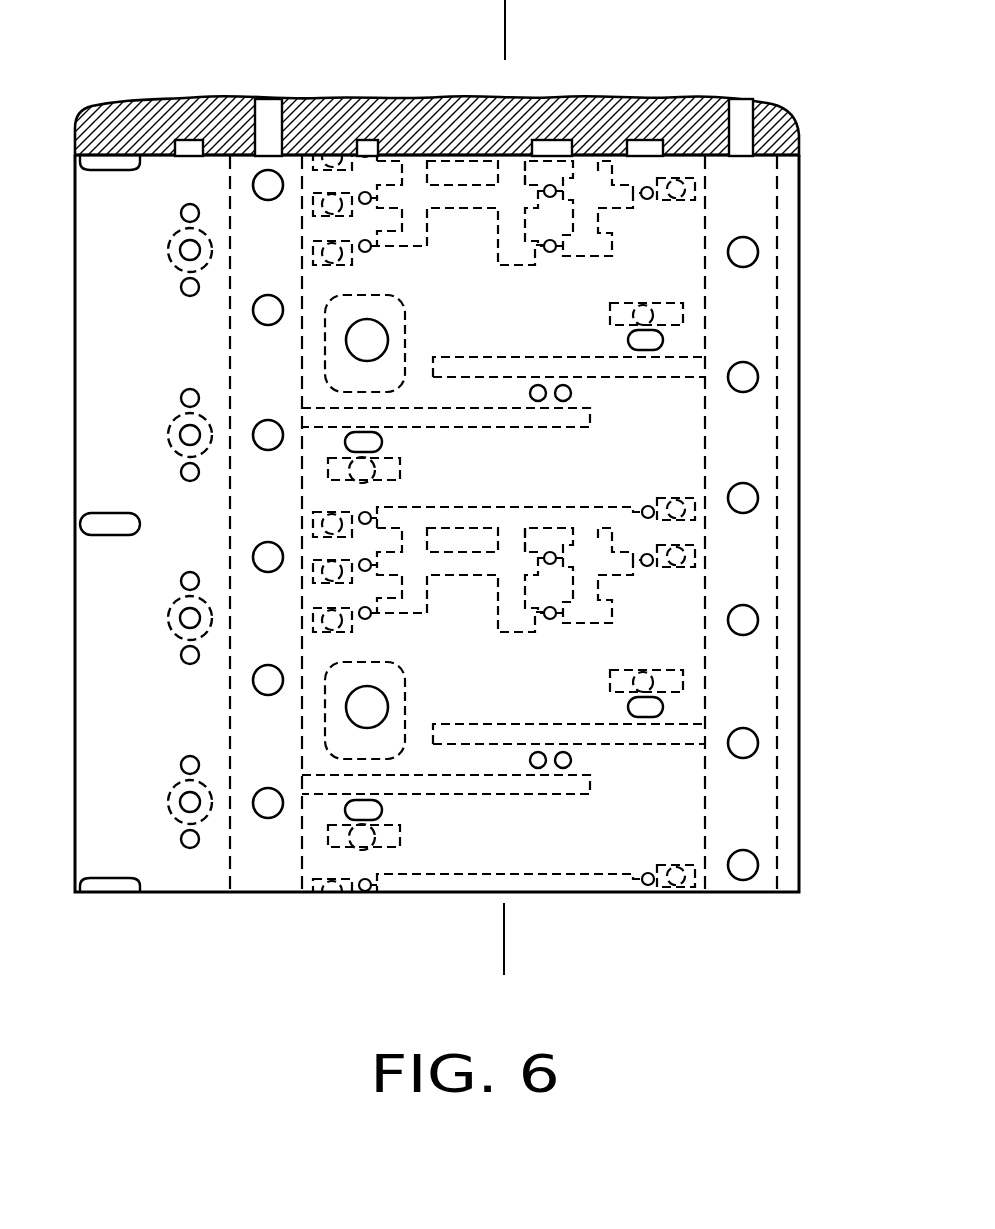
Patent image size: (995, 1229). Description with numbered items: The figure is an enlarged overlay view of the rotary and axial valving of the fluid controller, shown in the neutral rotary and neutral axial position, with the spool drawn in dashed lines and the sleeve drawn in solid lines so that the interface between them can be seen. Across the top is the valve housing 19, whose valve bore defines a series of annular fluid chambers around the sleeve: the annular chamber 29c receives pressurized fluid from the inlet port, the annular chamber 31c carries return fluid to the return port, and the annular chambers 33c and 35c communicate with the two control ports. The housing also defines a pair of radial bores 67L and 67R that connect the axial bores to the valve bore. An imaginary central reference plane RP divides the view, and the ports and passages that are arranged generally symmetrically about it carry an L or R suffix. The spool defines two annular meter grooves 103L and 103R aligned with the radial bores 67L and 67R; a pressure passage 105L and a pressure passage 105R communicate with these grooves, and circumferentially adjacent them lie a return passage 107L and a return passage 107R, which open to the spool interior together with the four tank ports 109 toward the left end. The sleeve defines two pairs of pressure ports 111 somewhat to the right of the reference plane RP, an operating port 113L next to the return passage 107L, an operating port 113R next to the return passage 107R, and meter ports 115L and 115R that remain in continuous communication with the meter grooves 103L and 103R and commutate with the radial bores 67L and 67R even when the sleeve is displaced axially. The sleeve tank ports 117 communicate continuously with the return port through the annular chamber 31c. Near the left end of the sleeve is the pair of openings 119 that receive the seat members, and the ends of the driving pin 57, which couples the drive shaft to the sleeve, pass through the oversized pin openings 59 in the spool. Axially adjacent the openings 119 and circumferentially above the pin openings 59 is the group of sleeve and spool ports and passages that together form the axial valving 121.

The valve housing 19 is at (437, 118).
The annular chamber 29c is at (547, 150).
The annular chamber 31c is at (190, 147).
The annular chamber 33c is at (365, 142).
The annular chamber 35c is at (647, 148).
The driving pin 57 is at (370, 708).
The oversized pin openings 59 is at (400, 302).
The radial bore 67L is at (270, 128).
The radial bore 67R is at (737, 127).
The annular meter groove 103L is at (255, 339).
The annular meter groove 103R is at (743, 328).
The pressure passage 105L is at (500, 418).
The pressure passage 105R is at (522, 372).
The return passage 107L is at (367, 481).
The return passage 107R is at (645, 312).
The tank ports 109 is at (170, 625).
The pressure ports 111 is at (572, 393).
The operating port 113L is at (372, 443).
The operating port 113R is at (640, 341).
The meter ports 115L is at (265, 554).
The meter ports 115R is at (753, 378).
The tank ports 117 is at (185, 767).
The openings 119 is at (105, 160).
The axial valving 121 is at (630, 597).
The reference plane RP is at (505, 34).